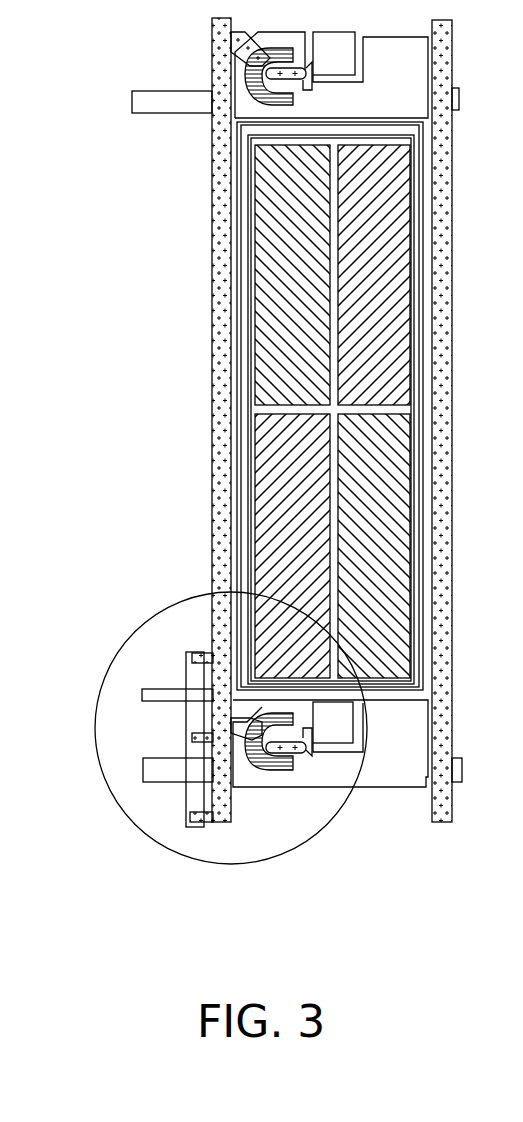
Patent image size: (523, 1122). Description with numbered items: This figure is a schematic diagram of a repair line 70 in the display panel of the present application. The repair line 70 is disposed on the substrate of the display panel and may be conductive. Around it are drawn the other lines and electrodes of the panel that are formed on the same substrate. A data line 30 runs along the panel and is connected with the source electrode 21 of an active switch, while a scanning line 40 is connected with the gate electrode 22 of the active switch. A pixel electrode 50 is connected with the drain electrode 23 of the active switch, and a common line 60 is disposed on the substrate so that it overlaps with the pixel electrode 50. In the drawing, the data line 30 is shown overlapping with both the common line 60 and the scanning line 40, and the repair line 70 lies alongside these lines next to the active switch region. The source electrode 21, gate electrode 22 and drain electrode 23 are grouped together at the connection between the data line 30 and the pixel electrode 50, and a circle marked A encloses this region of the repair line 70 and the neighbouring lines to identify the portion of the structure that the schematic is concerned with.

The data line 30 is at (222, 615).
The pixel electrode 50 is at (262, 613).
The source electrode 21 is at (253, 742).
The gate electrode 22 is at (278, 755).
The drain electrode 23 is at (307, 760).
The scanning line 40 is at (163, 773).
The common line 60 is at (157, 692).
The repair line 70 is at (192, 790).
The detail region A is at (200, 863).